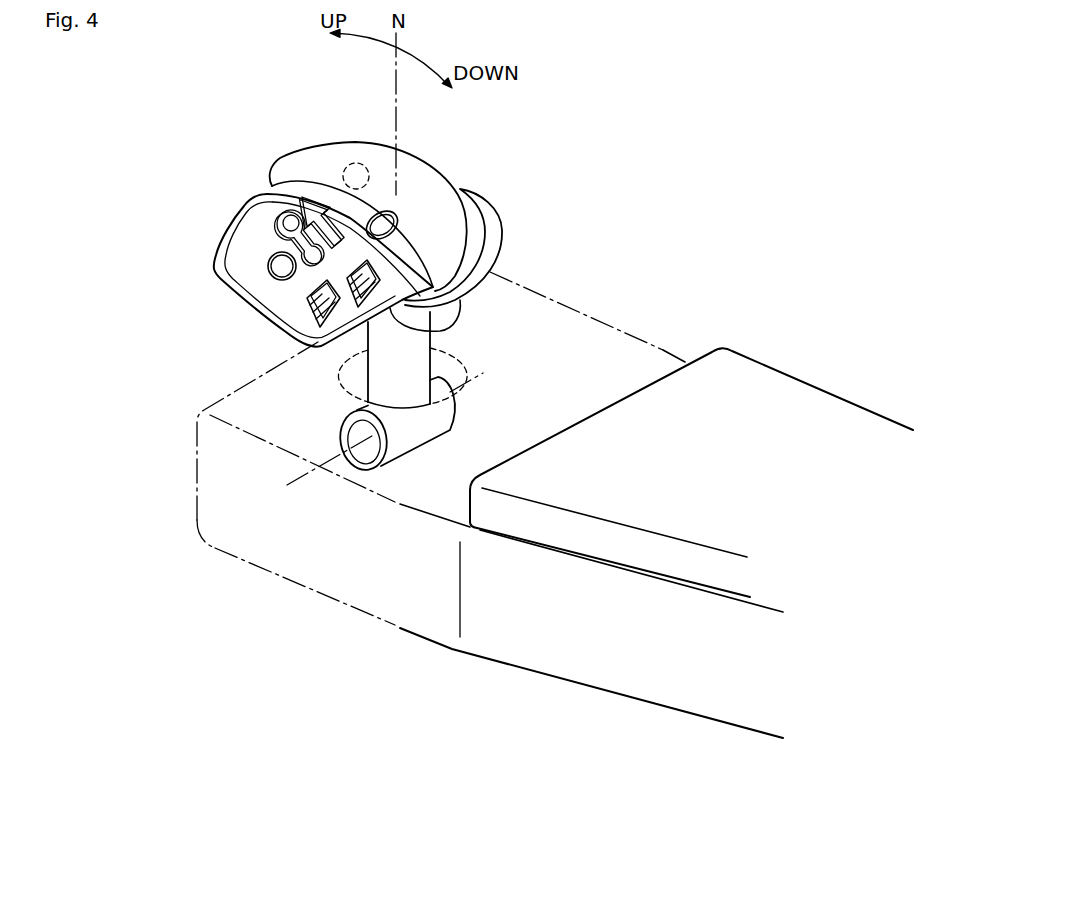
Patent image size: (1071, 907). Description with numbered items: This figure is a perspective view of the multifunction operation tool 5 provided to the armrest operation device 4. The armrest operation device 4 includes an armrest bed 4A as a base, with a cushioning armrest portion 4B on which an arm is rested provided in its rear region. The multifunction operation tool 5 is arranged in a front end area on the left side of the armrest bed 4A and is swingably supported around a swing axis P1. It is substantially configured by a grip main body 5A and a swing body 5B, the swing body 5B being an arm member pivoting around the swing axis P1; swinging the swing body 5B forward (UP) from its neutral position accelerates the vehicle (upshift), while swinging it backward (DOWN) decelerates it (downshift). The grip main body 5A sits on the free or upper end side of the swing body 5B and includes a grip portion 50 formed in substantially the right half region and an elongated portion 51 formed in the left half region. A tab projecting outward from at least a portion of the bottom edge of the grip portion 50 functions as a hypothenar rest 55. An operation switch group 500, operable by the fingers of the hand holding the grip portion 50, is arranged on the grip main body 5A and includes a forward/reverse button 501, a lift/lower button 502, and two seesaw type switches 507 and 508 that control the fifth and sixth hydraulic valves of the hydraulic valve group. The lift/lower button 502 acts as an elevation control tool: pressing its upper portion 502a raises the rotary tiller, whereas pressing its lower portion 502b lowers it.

The armrest operation device 4 is at (750, 285).
The armrest bed 4A is at (588, 645).
The armrest portion 4B is at (818, 392).
The multifunction operation tool 5 is at (168, 134).
The grip main body 5A is at (499, 257).
The swing body 5B is at (436, 352).
The grip portion 50 is at (453, 175).
The elongated portion 51 is at (224, 287).
The hypothenar rest 55 is at (480, 237).
The operation switch group 500 is at (263, 233).
The forward/reverse button 501 is at (298, 197).
The lift/lower button 502 is at (276, 214).
The upper portion of the lift/lower button 502a is at (284, 228).
The lower portion of the lift/lower button 502b is at (312, 268).
The switch 507 is at (384, 271).
The switch 508 is at (312, 330).
The swing axis P1 is at (289, 482).